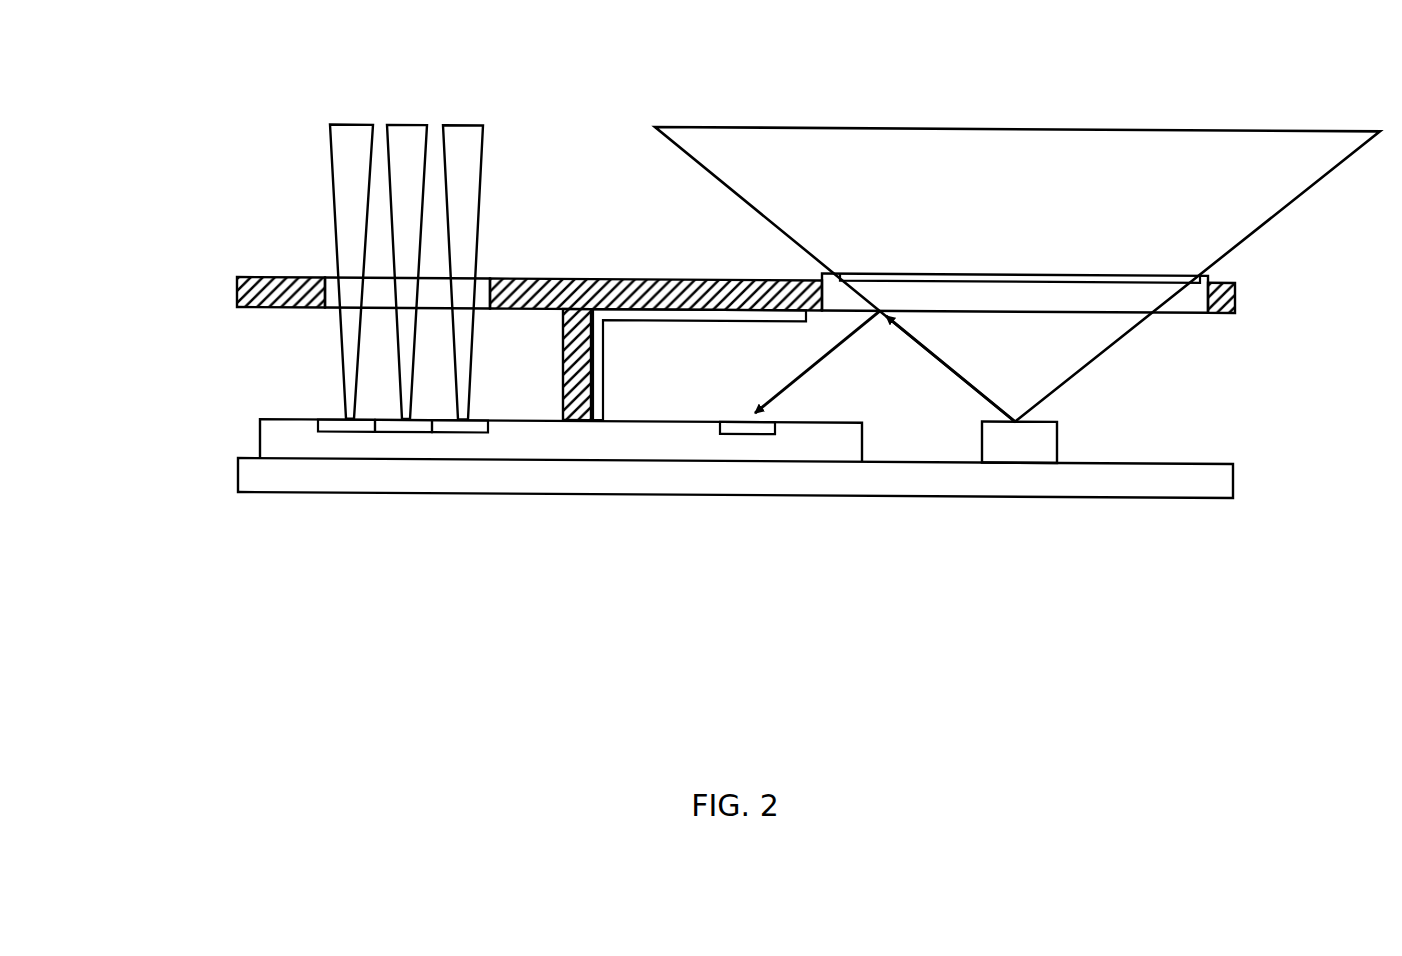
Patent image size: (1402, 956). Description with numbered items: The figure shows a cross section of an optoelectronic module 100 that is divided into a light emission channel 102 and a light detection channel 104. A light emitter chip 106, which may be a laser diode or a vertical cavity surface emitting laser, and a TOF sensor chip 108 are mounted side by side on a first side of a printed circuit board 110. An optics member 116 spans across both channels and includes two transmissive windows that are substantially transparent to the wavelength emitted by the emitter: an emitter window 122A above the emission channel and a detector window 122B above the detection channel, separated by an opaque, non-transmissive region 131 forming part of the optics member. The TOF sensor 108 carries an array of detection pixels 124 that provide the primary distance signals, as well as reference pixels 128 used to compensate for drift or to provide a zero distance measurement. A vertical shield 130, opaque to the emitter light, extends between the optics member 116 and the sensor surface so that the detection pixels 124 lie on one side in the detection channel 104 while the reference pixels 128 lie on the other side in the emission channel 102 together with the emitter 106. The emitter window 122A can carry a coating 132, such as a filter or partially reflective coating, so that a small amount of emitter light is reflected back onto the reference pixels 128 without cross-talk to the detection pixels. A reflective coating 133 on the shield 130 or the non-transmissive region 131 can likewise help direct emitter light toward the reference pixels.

The optoelectronic module 100 is at (1006, 96).
The light emission channel 102 is at (994, 367).
The light detection channel 104 is at (359, 383).
The light emitter chip 106 is at (1037, 440).
The TOF sensor chip 108 is at (328, 443).
The printed circuit board 110 is at (915, 481).
The optics member 116 is at (235, 263).
The emitter window 122A is at (1108, 293).
The detector window 122B is at (337, 291).
The detection pixels 124 is at (407, 425).
The reference pixels 128 is at (733, 424).
The vertical shield 130 is at (563, 351).
The non-transmissive region 131 is at (620, 276).
The coating 132 is at (1073, 277).
The reflective coating 133 is at (603, 360).